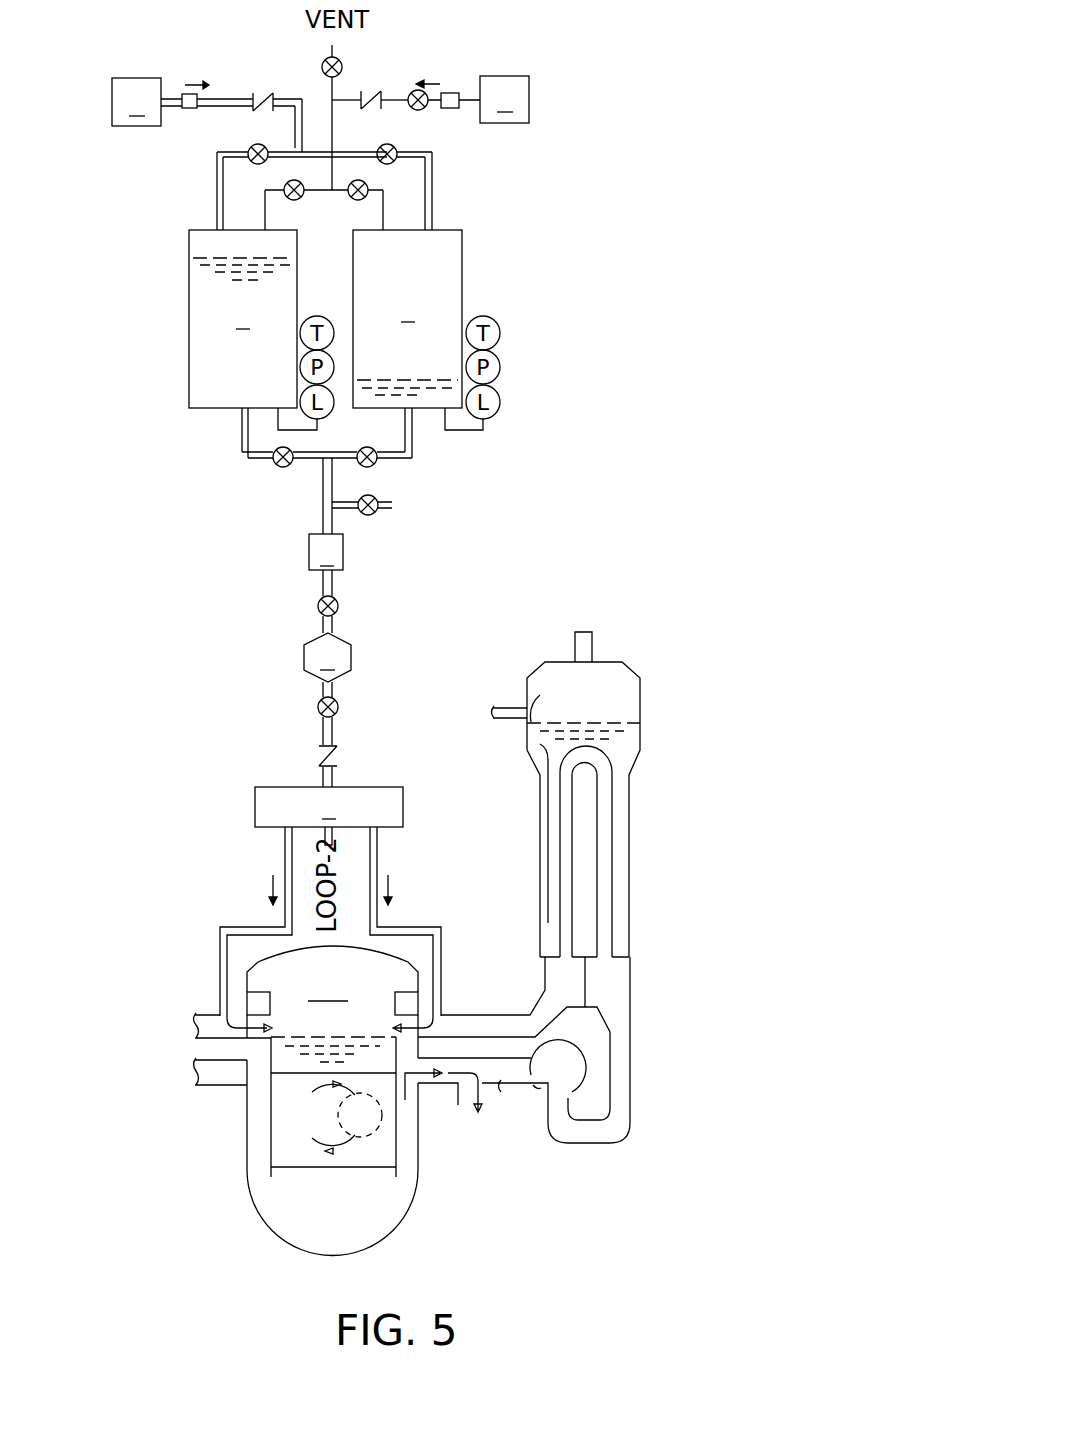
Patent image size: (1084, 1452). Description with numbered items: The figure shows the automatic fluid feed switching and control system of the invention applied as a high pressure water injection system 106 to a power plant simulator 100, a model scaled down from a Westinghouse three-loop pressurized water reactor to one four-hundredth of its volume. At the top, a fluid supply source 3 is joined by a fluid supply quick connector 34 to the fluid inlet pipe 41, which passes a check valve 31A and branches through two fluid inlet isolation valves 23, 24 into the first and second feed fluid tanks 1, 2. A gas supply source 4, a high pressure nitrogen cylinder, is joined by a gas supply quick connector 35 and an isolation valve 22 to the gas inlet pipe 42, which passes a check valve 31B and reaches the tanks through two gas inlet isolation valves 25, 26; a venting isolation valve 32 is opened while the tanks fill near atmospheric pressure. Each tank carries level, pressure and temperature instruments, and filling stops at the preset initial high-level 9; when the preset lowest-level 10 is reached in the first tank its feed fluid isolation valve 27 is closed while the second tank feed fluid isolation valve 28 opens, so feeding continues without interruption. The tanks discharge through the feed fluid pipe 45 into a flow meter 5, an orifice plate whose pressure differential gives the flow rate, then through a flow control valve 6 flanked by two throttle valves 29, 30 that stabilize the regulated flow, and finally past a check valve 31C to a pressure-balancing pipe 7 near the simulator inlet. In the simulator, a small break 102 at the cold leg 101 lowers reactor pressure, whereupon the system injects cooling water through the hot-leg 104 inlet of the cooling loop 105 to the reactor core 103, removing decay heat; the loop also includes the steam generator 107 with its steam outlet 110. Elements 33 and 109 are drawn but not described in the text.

The first feed fluid tank 1 is at (243, 319).
The second feed fluid tank 2 is at (407, 319).
The fluid supply source 3 is at (136, 102).
The gas supply source 4 is at (504, 99).
The flow meter 5 is at (326, 552).
The flow control valve 6 is at (327, 657).
The pressure-balancing pipe 7 is at (329, 816).
The preset initial high-level 9 is at (192, 256).
The preset lowest-level 10 is at (391, 378).
The isolation valve 22 is at (424, 90).
The fluid inlet isolation valve 23 is at (253, 146).
The fluid inlet isolation valve 24 is at (396, 144).
The gas inlet isolation valve 25 is at (285, 185).
The gas inlet isolation valve 26 is at (368, 185).
The first tank feed fluid isolation valve 27 is at (276, 468).
The second tank feed fluid isolation valve 28 is at (378, 462).
The throttle valve 29 is at (340, 604).
The throttle valve 30 is at (340, 704).
The check valve 31A is at (260, 90).
The check valve 31B is at (372, 91).
The check valve 31C is at (340, 750).
The venting isolation valve 32 is at (322, 65).
The drain valve 33 is at (372, 516).
The fluid supply quick connector 34 is at (192, 113).
The gas supply quick connector 35 is at (452, 110).
The fluid inlet pipe 41 is at (236, 96).
The gas inlet pipe 42 is at (396, 97).
The feed fluid pipe 45 is at (322, 520).
The power plant simulator 100 is at (332, 1101).
The cold leg 101 is at (224, 1085).
The small break 102 is at (465, 1095).
The reactor core 103 is at (272, 1140).
The hot-leg 104 is at (208, 1014).
The cooling loop 105 is at (572, 1050).
The high pressure water injection system 106 is at (480, 293).
The steam generator 107 is at (555, 660).
The pump suction line 109 is at (538, 1090).
The steam outlet 110 is at (592, 634).